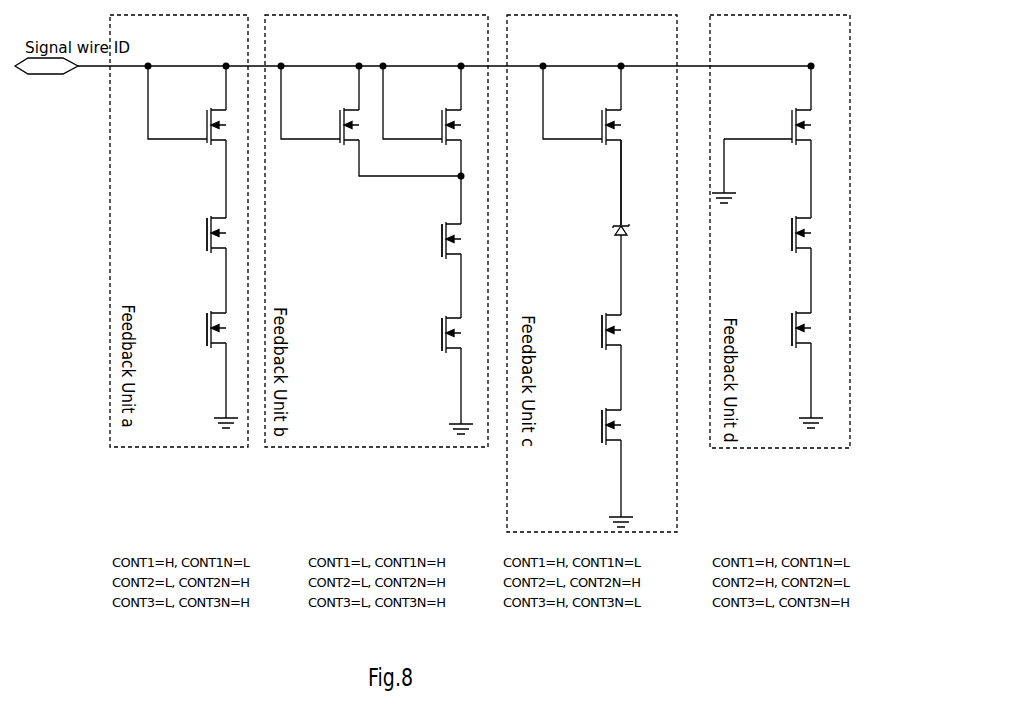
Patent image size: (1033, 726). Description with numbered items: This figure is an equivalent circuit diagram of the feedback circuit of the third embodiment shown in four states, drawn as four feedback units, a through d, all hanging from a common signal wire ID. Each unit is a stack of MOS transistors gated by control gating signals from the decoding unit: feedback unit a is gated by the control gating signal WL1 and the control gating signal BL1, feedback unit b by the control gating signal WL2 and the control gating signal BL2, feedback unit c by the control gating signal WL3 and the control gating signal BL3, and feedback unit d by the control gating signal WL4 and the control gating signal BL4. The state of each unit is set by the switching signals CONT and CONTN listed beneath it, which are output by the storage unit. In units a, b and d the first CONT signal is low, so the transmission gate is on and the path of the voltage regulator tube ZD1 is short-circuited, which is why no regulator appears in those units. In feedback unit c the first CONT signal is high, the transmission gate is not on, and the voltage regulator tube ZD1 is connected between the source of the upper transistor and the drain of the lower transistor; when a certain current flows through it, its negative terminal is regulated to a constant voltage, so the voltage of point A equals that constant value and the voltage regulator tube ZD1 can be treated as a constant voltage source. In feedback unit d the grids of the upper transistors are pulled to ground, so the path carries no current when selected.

The control gating signal WL1 is at (207, 247).
The control gating signal WL2 is at (442, 253).
The control gating signal WL3 is at (602, 344).
The control gating signal WL4 is at (792, 247).
The control gating signal BL1 is at (207, 342).
The control gating signal BL2 is at (442, 347).
The control gating signal BL3 is at (602, 439).
The control gating signal BL4 is at (792, 342).
The voltage regulator tube ZD1 is at (602, 232).
The point A is at (639, 182).